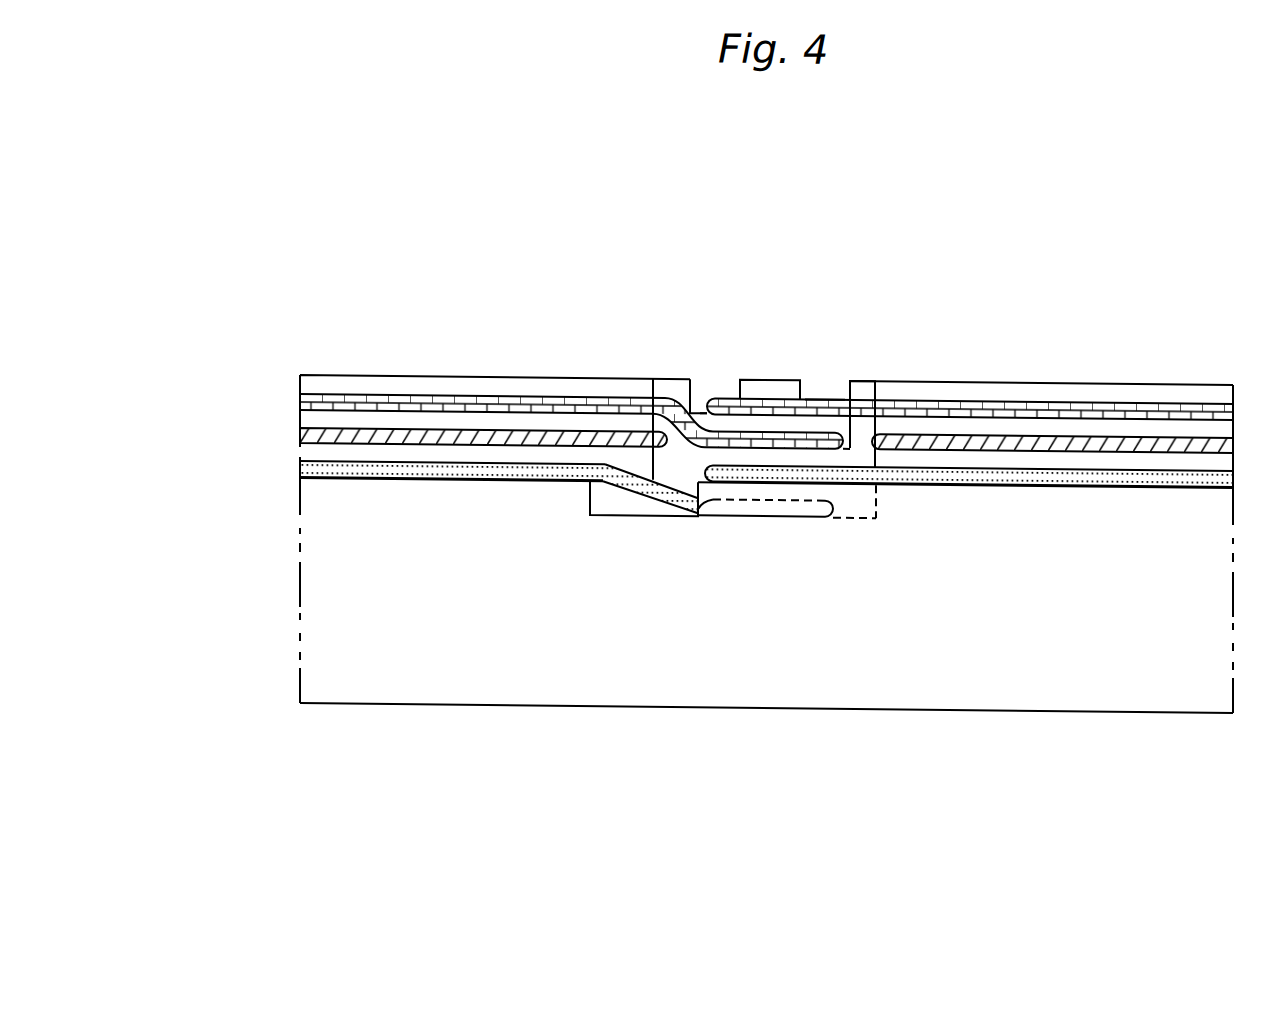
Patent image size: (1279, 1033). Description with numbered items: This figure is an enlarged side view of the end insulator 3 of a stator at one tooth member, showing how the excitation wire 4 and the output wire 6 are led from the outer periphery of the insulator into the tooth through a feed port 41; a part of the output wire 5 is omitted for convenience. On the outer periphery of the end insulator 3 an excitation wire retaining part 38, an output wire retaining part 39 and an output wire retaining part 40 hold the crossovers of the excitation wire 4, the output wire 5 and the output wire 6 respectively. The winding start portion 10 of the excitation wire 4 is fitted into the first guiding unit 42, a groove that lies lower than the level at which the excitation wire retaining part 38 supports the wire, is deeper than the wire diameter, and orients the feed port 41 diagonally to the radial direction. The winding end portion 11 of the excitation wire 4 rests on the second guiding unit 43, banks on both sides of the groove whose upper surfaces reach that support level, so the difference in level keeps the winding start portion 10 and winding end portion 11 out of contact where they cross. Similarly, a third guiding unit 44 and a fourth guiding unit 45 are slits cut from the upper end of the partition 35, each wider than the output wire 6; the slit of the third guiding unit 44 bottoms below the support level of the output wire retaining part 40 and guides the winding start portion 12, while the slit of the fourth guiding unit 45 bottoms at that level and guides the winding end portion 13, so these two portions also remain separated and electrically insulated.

The end insulator 3 is at (355, 745).
The excitation wire 4 is at (317, 462).
The output wire 5 is at (363, 428).
The output wire 6 is at (431, 398).
The winding start portion 10 is at (632, 487).
The winding end portion 11 is at (858, 479).
The winding start portion 12 is at (690, 408).
The winding end portion 13 is at (765, 392).
The partition 35 is at (677, 373).
The excitation wire retaining part 38 is at (1092, 455).
The output wire retaining part 39 is at (1020, 422).
The output wire retaining part 40 is at (967, 383).
The feed port 41 is at (862, 358).
The first guiding unit 42 is at (643, 513).
The second guiding unit 43 is at (832, 477).
The third guiding unit 44 is at (827, 369).
The fourth guiding unit 45 is at (712, 369).